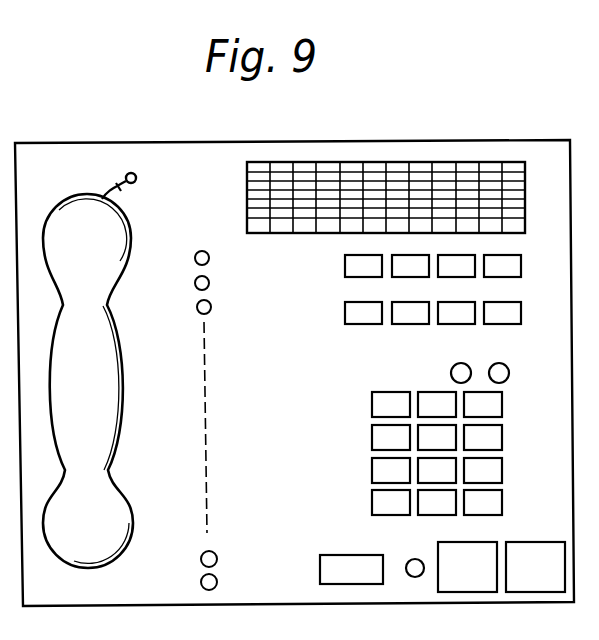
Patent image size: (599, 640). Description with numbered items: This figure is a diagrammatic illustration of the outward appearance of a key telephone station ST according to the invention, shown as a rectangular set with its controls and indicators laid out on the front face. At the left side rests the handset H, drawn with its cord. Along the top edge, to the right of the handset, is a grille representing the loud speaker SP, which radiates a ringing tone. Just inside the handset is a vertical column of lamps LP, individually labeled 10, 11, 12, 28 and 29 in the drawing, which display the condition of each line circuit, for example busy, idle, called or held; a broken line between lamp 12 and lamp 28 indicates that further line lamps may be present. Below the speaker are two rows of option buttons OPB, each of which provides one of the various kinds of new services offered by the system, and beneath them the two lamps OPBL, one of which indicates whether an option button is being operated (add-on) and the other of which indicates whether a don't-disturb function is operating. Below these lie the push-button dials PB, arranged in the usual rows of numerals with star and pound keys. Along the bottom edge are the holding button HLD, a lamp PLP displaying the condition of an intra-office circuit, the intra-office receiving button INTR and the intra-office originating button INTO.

The key telephone station ST is at (366, 141).
The loud speaker SP is at (525, 177).
The handset H is at (89, 370).
The lamps LP is at (220, 405).
The line lamp 10 is at (217, 259).
The line lamp 11 is at (216, 284).
The line lamp 12 is at (218, 308).
The line lamp 28 is at (227, 559).
The line lamp 29 is at (227, 582).
The option buttons OPB is at (335, 252).
The two lamps OPBL is at (517, 361).
The push-button dials PB is at (359, 390).
The holding button HLD is at (351, 569).
The lamps PLP is at (411, 555).
The intra-office receiving button INTR is at (467, 567).
The intra-office originating button INTO is at (535, 567).